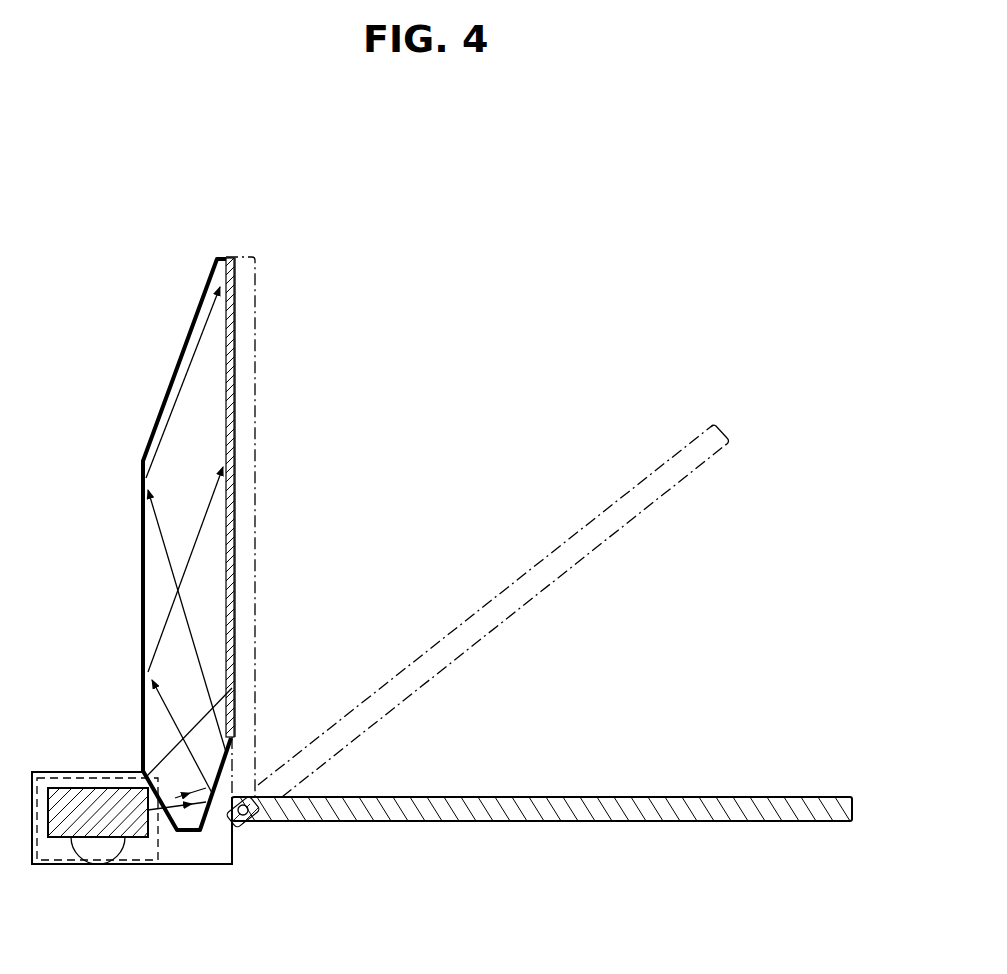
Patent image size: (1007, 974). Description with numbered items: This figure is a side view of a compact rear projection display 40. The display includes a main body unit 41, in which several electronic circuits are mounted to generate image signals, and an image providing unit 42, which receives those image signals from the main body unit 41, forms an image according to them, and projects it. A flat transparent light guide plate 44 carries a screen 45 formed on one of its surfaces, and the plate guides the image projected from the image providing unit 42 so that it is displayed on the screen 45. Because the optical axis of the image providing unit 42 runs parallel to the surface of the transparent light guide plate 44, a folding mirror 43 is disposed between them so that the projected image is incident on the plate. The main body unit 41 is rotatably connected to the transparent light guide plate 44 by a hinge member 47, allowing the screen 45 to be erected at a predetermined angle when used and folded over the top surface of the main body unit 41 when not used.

The compact rear projection display 40 is at (228, 947).
The main body unit 41 is at (465, 822).
The image providing unit 42 is at (39, 792).
The folding mirror 43 is at (95, 790).
The transparent light guide plate 44 is at (162, 405).
The screen 45 is at (237, 535).
The hinge member 47 is at (250, 818).